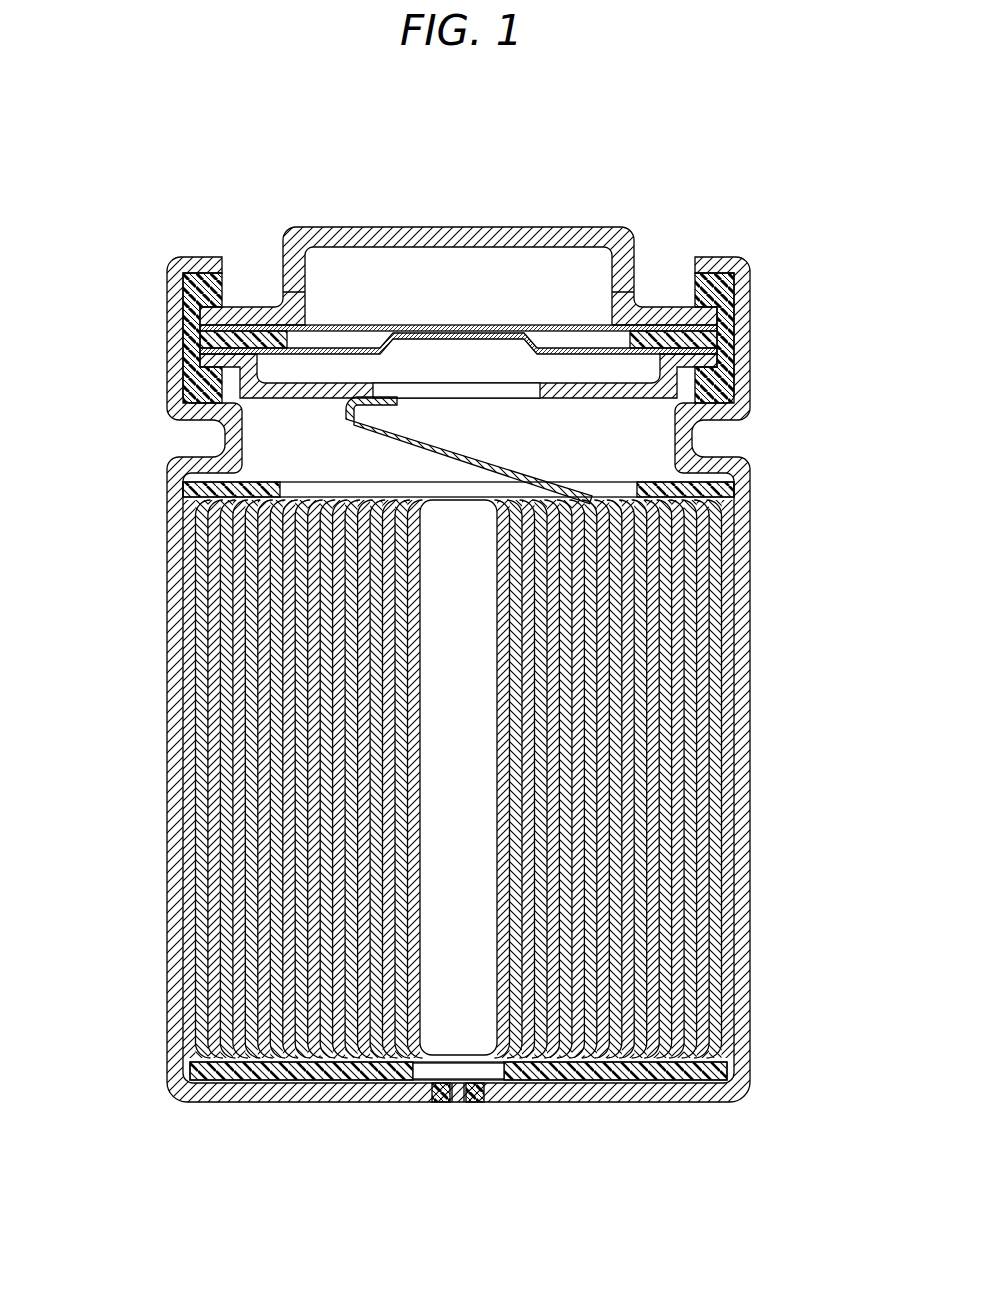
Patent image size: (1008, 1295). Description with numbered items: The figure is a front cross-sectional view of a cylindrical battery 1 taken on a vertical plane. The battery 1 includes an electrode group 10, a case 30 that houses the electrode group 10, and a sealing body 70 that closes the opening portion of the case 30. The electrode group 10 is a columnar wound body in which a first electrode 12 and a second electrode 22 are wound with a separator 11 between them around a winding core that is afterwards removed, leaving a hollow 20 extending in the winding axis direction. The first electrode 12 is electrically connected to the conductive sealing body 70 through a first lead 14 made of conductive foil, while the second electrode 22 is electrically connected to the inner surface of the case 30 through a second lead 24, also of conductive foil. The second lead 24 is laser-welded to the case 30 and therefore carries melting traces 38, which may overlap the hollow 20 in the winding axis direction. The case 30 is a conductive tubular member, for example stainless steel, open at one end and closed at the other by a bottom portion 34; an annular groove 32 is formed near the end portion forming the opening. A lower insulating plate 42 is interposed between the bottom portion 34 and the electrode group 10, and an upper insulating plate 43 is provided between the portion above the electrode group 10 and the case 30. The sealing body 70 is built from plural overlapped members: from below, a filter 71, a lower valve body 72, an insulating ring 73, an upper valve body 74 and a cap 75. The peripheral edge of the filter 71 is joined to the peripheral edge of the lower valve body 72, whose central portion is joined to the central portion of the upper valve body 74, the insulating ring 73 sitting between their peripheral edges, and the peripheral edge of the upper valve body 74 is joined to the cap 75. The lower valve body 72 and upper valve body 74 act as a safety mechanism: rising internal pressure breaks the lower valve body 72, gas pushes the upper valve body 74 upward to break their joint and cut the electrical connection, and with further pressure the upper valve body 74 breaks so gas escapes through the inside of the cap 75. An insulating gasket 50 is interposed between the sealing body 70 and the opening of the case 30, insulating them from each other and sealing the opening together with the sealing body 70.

The battery 1 is at (465, 131).
The electrode group 10 is at (529, 779).
The separator 11 is at (705, 600).
The first electrode 12 is at (690, 662).
The first lead 14 is at (347, 415).
The hollow 20 is at (472, 803).
The second electrode 22 is at (831, 592).
The second lead 24 is at (307, 1085).
The case 30 is at (399, 720).
The groove 32 is at (200, 445).
The bottom portion 34 is at (613, 1097).
The melting traces 38 is at (448, 1102).
The lower insulating plate 42 is at (745, 1085).
The upper insulating plate 43 is at (738, 490).
The gasket 50 is at (213, 287).
The sealing body 70 is at (538, 309).
The filter 71 is at (514, 385).
The lower valve body 72 is at (690, 351).
The insulating ring 73 is at (705, 337).
The upper valve body 74 is at (665, 300).
The cap 75 is at (603, 225).